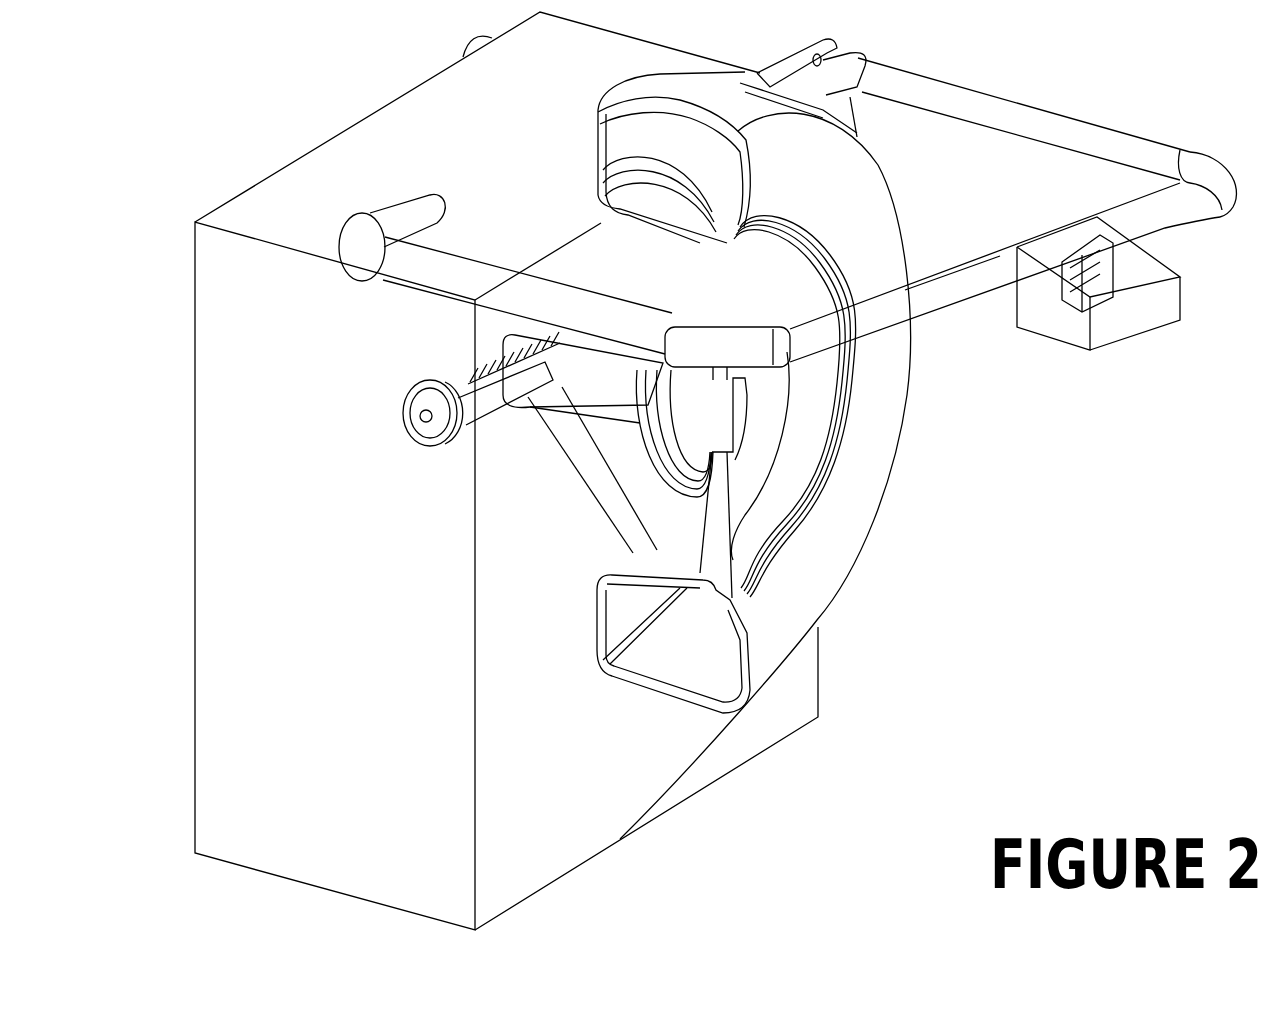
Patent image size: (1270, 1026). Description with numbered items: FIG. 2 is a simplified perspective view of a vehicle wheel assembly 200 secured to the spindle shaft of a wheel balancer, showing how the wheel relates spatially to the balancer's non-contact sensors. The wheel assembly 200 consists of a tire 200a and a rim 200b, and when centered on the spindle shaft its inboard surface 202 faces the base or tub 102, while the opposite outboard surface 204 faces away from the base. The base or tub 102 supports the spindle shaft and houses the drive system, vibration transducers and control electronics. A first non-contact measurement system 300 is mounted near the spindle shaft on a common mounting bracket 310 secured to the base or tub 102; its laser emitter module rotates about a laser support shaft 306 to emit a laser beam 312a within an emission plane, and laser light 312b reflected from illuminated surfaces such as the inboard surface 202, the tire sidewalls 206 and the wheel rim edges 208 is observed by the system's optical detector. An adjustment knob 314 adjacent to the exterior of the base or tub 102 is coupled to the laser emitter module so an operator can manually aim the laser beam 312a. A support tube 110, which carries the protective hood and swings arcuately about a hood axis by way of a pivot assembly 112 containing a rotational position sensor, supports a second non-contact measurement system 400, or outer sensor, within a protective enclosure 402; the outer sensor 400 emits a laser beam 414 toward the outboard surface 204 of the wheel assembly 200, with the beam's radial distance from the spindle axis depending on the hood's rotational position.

The base or tub 102 is at (455, 471).
The support tube 110 is at (787, 231).
The pivot assembly 112 is at (762, 74).
The vehicle wheel assembly 200 is at (878, 476).
The tire 200a is at (721, 707).
The rim 200b is at (829, 316).
The inboard surface 202 is at (476, 239).
The outboard surface 204 is at (793, 537).
The tire sidewalls 206 is at (820, 560).
The wheel rim edges 208 is at (664, 329).
The non-contact measurement system 300 is at (503, 439).
The laser support shaft 306 is at (409, 358).
The common mounting bracket 310 is at (507, 421).
The laser beam 312a is at (494, 540).
The reflected laser light 312b is at (509, 588).
The adjustment knob 314 is at (355, 432).
The second non-contact measurement system 400 is at (1156, 273).
The protective enclosure 402 is at (1126, 313).
The laser beam 414 is at (1027, 171).